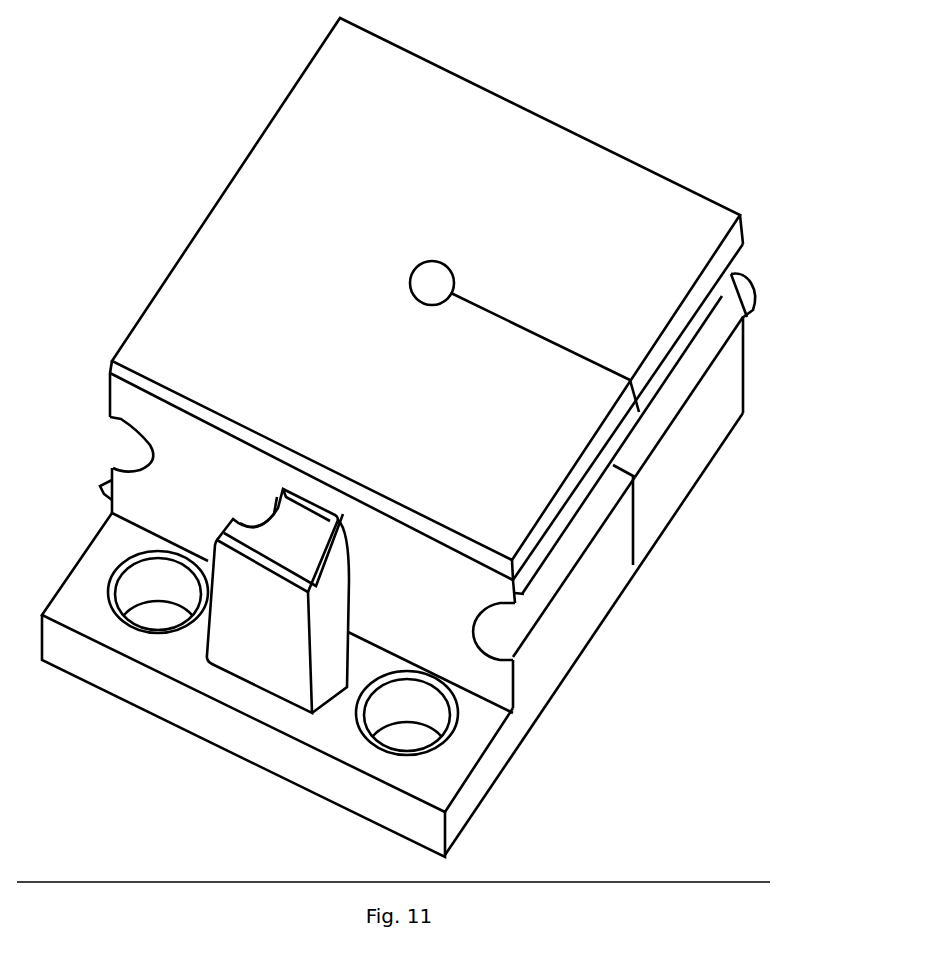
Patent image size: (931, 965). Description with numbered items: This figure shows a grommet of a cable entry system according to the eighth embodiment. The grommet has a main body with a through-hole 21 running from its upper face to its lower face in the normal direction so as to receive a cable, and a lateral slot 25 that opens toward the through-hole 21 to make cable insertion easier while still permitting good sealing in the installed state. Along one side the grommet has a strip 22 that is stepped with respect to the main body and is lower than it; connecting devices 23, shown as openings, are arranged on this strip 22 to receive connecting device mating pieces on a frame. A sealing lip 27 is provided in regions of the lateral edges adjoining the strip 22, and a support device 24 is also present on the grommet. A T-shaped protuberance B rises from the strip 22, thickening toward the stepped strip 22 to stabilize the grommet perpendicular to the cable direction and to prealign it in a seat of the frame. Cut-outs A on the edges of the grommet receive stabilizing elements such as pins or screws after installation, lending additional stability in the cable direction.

The through-hole 21 is at (412, 283).
The strip 22 is at (500, 757).
The connecting devices 23 is at (396, 737).
The support device 24 is at (756, 278).
The slot 25 is at (528, 312).
The sealing lip 27 is at (96, 498).
The cut-out A is at (118, 433).
The protuberance B is at (288, 533).